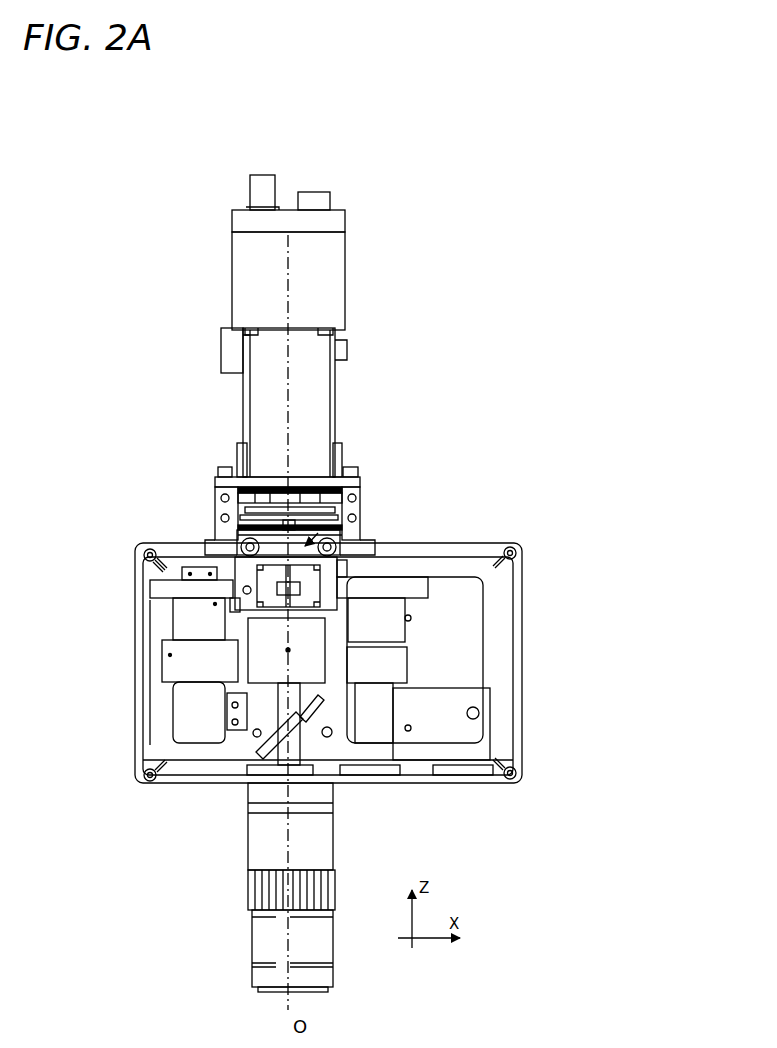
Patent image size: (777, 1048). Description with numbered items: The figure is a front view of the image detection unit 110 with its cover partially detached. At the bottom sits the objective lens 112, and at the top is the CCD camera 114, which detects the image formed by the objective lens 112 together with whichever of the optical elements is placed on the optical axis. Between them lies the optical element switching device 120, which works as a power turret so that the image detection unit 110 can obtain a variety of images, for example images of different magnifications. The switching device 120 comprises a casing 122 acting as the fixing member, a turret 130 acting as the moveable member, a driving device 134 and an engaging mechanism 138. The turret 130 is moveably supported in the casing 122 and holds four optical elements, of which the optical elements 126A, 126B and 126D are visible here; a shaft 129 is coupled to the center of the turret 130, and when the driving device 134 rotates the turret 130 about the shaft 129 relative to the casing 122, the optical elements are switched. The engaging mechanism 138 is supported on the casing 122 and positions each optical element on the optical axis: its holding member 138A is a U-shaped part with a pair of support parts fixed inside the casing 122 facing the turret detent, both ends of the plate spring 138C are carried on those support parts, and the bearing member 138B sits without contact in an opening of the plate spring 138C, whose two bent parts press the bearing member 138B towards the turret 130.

The image detection unit 110 is at (402, 162).
The CCD camera 114 is at (331, 281).
The driving device 134 is at (308, 412).
The optical element switching device 120 is at (412, 428).
The engaging mechanism 138 is at (365, 537).
The holding member 138A is at (243, 537).
The bearing member 138B is at (275, 590).
The plate spring 138C is at (241, 607).
The casing 122 is at (362, 541).
The turret 130 is at (418, 583).
The optical element 126A is at (252, 668).
The optical element 126B is at (163, 653).
The optical element 126D is at (392, 665).
The shaft 129 is at (278, 738).
The objective lens 112 is at (303, 947).